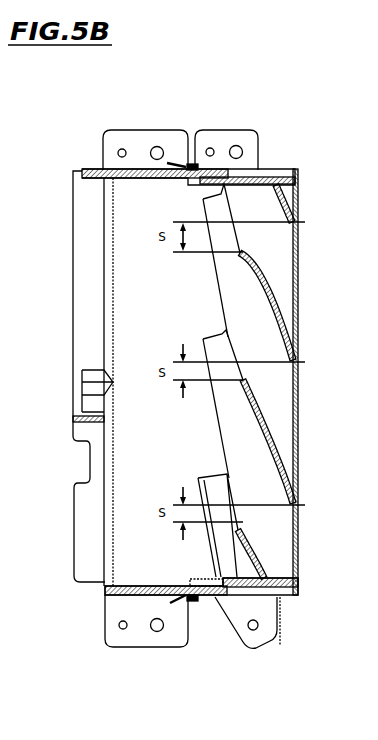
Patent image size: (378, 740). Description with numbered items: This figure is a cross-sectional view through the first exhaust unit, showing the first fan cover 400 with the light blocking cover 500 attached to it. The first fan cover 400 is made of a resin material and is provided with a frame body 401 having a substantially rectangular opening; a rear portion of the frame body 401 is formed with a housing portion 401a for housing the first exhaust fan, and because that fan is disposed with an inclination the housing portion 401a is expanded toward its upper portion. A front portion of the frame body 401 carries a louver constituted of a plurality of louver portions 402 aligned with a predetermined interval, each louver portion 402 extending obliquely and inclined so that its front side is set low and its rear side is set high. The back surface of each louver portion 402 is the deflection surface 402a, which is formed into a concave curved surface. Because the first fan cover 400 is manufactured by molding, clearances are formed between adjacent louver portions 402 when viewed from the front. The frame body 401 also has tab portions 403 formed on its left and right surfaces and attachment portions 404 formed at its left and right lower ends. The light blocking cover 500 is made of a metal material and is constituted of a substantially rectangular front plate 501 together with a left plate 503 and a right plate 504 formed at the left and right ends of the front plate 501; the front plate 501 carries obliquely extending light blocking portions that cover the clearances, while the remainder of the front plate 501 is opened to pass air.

The first fan cover 400 is at (85, 165).
The frame body 401 is at (121, 597).
The housing portion 401a is at (163, 582).
The louver portion 402 is at (283, 298).
The deflection surface 402a is at (250, 283).
The tab portion 403 is at (192, 163).
The attachment portion 404 is at (140, 131).
The light blocking cover 500 is at (302, 171).
The front plate 501 is at (300, 237).
The left plate 503 is at (263, 598).
The right plate 504 is at (265, 168).